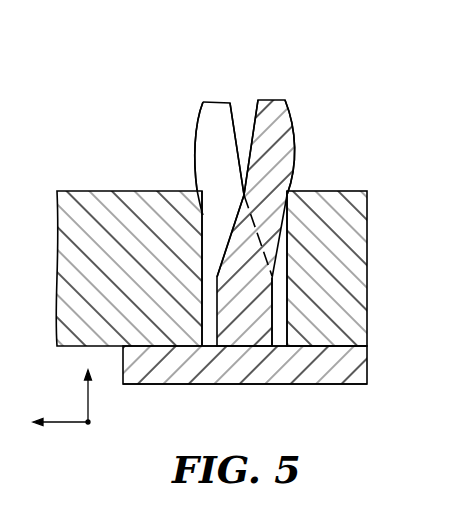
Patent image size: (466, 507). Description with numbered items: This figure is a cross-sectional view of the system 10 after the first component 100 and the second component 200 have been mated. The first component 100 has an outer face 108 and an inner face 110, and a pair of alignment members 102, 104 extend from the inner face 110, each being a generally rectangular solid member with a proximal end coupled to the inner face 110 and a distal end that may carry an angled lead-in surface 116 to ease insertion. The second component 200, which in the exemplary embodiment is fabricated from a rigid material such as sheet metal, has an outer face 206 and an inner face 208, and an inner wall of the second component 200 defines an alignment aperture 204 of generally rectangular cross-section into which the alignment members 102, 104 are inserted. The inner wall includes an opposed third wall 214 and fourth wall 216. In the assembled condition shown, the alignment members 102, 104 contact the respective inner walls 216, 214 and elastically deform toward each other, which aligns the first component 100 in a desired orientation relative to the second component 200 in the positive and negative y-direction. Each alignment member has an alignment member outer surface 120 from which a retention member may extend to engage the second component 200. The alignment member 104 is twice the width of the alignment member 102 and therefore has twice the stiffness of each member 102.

The system 10 is at (362, 60).
The first component 100 is at (200, 398).
The alignment member 102 is at (279, 88).
The alignment member 104 is at (209, 90).
The outer face 108 is at (330, 386).
The inner face 110 is at (348, 351).
The angled lead-in surface 116 is at (198, 113).
The alignment member outer surface 120 is at (199, 194).
The second component 200 is at (107, 181).
The alignment aperture 204 is at (242, 143).
The outer face 206 is at (344, 189).
The inner face 208 is at (349, 349).
The third wall 214 is at (212, 172).
The fourth wall 216 is at (296, 305).